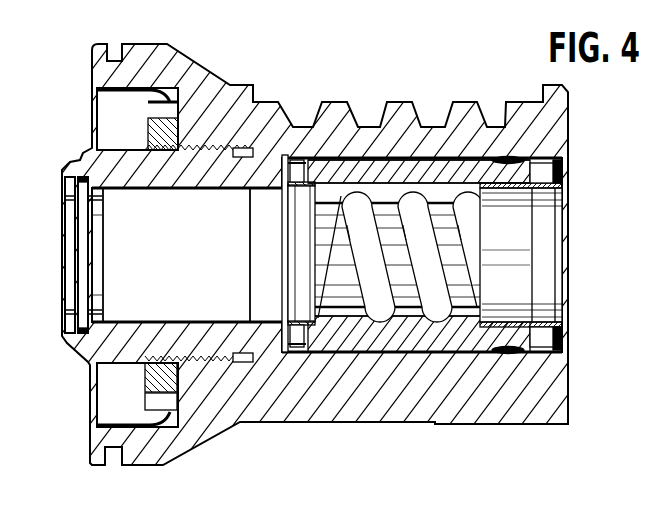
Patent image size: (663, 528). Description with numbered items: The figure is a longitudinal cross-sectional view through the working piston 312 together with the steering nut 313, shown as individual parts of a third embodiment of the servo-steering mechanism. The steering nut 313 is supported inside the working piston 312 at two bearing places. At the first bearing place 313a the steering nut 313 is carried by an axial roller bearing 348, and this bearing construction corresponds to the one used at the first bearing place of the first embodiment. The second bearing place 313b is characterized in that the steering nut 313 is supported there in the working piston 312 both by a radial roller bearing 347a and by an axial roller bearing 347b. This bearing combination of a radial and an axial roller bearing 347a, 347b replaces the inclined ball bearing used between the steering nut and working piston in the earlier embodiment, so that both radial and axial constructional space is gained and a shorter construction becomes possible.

The working piston 312 is at (297, 430).
The steering nut 313 is at (432, 175).
The bearing place 313a is at (284, 197).
The second bearing place 313b is at (525, 308).
The radial roller bearing 347a is at (516, 157).
The axial roller bearing 347b is at (556, 177).
The axial roller bearing 348 is at (297, 160).